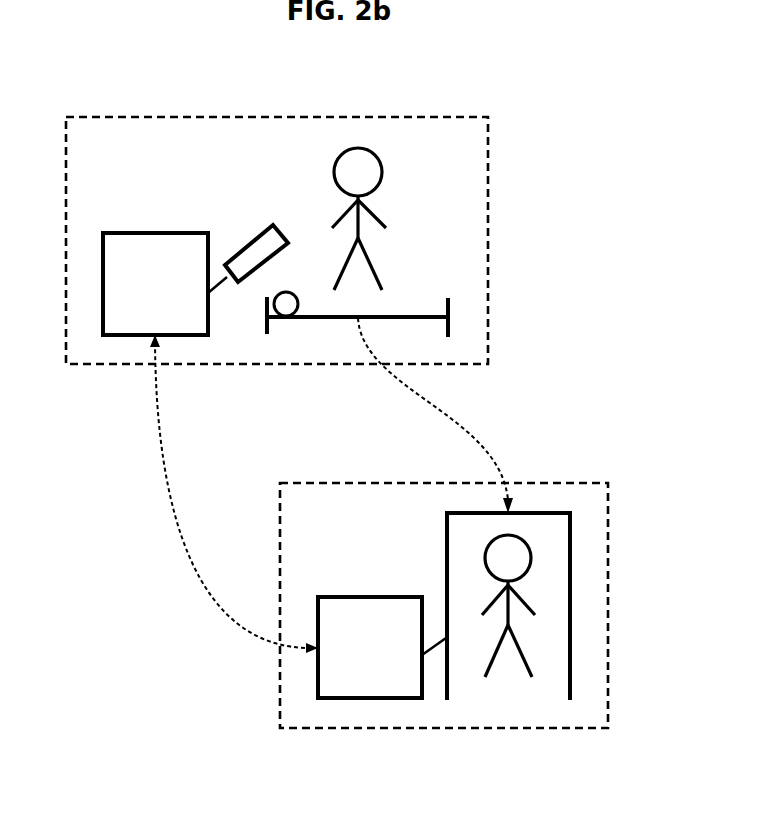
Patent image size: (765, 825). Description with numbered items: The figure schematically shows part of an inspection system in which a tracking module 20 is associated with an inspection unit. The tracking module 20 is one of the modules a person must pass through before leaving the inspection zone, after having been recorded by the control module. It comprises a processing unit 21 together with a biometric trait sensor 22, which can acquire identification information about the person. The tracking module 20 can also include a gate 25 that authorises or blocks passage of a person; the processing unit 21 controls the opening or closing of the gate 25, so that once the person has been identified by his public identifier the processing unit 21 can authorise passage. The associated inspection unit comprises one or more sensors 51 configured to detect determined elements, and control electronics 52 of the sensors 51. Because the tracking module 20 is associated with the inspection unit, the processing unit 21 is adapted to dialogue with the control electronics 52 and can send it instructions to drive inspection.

The tracking module 20 is at (496, 243).
The processing unit 21 is at (142, 293).
The biometric trait sensor 22 is at (232, 283).
The gate 25 is at (320, 318).
The sensor 51 is at (355, 658).
The control electronics 52 is at (570, 643).